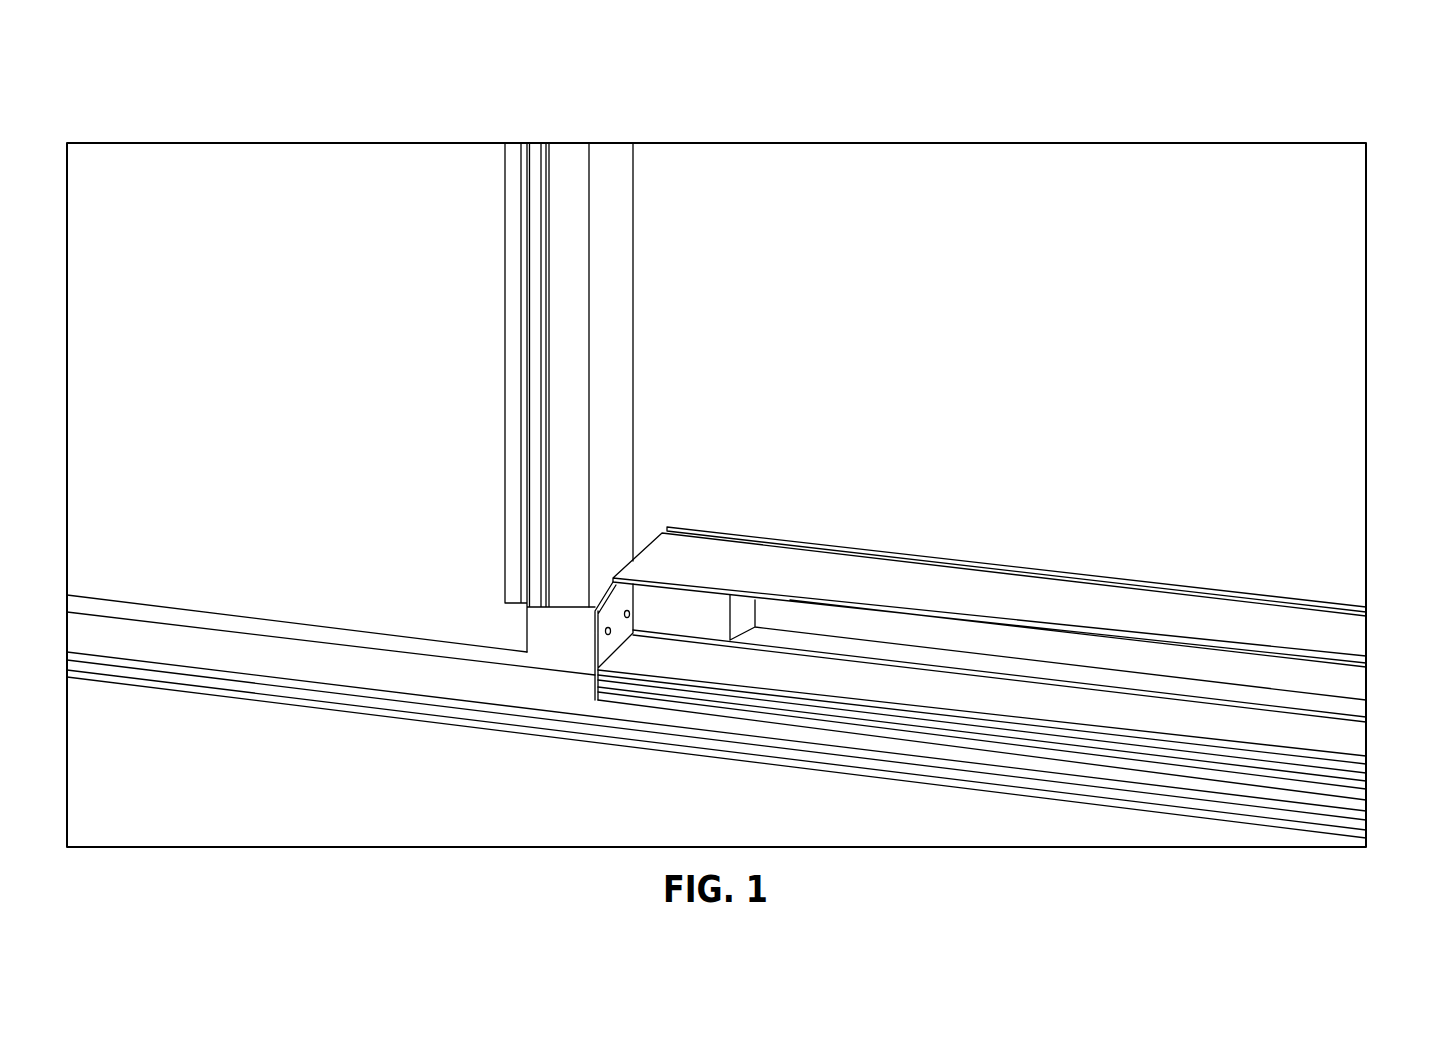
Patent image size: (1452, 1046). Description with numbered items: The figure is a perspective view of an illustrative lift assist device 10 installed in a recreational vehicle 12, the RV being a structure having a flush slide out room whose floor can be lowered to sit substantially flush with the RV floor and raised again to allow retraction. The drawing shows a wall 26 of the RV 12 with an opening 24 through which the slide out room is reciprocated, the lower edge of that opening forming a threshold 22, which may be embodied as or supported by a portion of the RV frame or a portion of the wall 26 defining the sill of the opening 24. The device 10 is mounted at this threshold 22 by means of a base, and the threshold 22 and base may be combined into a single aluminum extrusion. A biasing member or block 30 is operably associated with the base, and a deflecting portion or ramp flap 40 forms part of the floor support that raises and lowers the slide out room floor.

The lift assist device 10 is at (1216, 577).
The recreational vehicle 12 is at (355, 66).
The threshold 22 is at (1352, 747).
The opening 24 is at (943, 387).
The wall 26 is at (445, 185).
The biasing member or block 30 is at (612, 561).
The deflecting portion or ramp flap 40 is at (1350, 638).